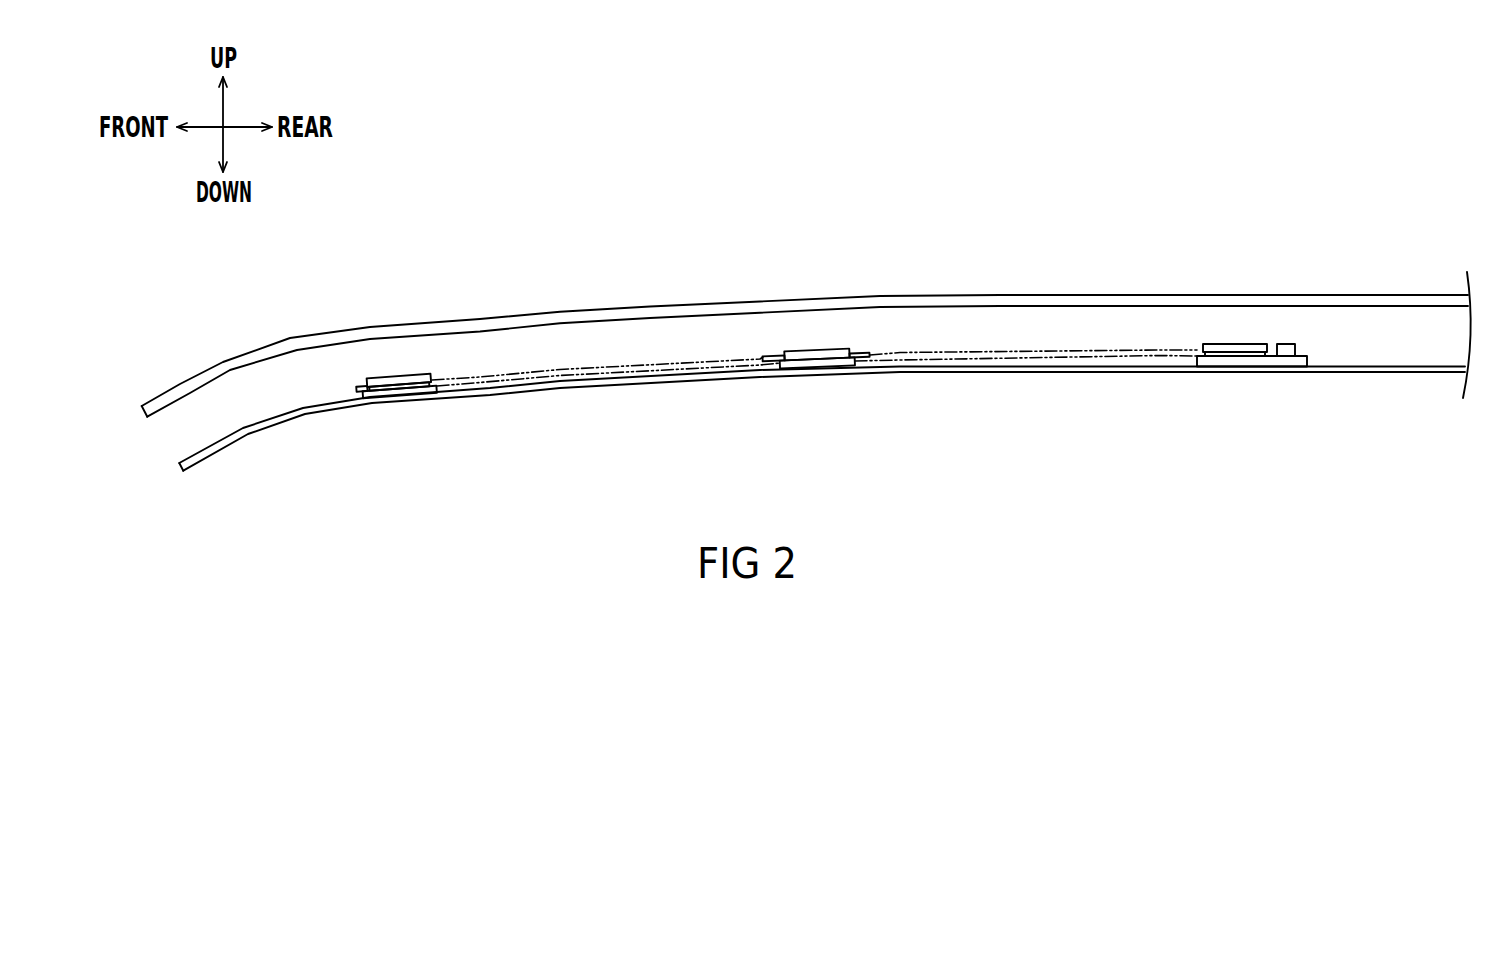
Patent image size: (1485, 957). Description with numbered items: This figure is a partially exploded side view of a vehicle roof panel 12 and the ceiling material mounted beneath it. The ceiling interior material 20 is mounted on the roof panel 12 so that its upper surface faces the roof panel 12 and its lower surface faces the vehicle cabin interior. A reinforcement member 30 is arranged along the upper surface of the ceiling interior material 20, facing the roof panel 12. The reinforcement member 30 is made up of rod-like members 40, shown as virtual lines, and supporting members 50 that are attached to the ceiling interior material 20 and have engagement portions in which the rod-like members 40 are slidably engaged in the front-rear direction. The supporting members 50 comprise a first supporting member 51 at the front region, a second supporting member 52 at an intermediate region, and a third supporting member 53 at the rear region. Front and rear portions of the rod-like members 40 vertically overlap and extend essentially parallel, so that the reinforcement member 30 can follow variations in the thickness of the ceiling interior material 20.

The roof panel 12 is at (1098, 295).
The ceiling interior material 20 is at (1349, 370).
The reinforcement member 30 is at (1286, 342).
The rod-like member 40 is at (621, 365).
The supporting member 50 is at (831, 289).
The first supporting member 51 is at (397, 377).
The second supporting member 52 is at (815, 350).
The third supporting member 53 is at (1228, 344).